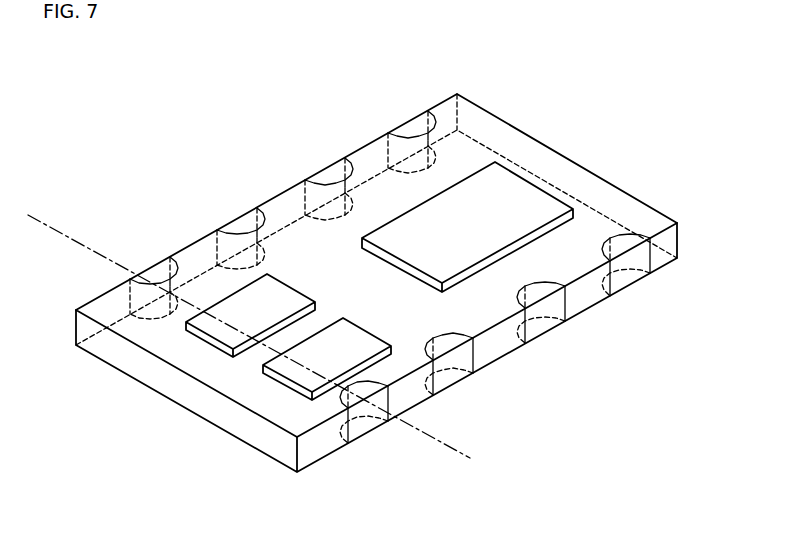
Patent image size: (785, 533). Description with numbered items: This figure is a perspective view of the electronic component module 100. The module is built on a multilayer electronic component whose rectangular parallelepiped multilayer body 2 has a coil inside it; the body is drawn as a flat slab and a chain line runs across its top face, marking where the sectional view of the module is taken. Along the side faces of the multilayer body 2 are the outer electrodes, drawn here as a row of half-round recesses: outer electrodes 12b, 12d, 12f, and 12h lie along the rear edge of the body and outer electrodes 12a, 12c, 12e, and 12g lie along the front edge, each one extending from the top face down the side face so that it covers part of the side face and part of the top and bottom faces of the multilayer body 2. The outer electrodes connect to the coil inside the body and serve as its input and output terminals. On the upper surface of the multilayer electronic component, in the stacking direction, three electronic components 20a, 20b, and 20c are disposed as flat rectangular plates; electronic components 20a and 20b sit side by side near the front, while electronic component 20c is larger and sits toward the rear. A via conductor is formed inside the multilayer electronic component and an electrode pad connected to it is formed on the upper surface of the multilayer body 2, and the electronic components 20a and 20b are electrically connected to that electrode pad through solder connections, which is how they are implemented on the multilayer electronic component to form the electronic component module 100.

The electronic component module 100 is at (152, 58).
The multilayer body 2 is at (137, 354).
The outer electrode 12a is at (365, 437).
The outer electrode 12b is at (160, 280).
The outer electrode 12c is at (443, 380).
The outer electrode 12d is at (240, 220).
The notch (castellation) 12e is at (538, 325).
The notch (castellation) 12f is at (330, 172).
The notch (castellation) 12g is at (627, 283).
The notch (castellation) 12h is at (410, 130).
The electronic component 20a is at (226, 325).
The electronic component 20b is at (317, 378).
The electronic component 20c is at (492, 208).